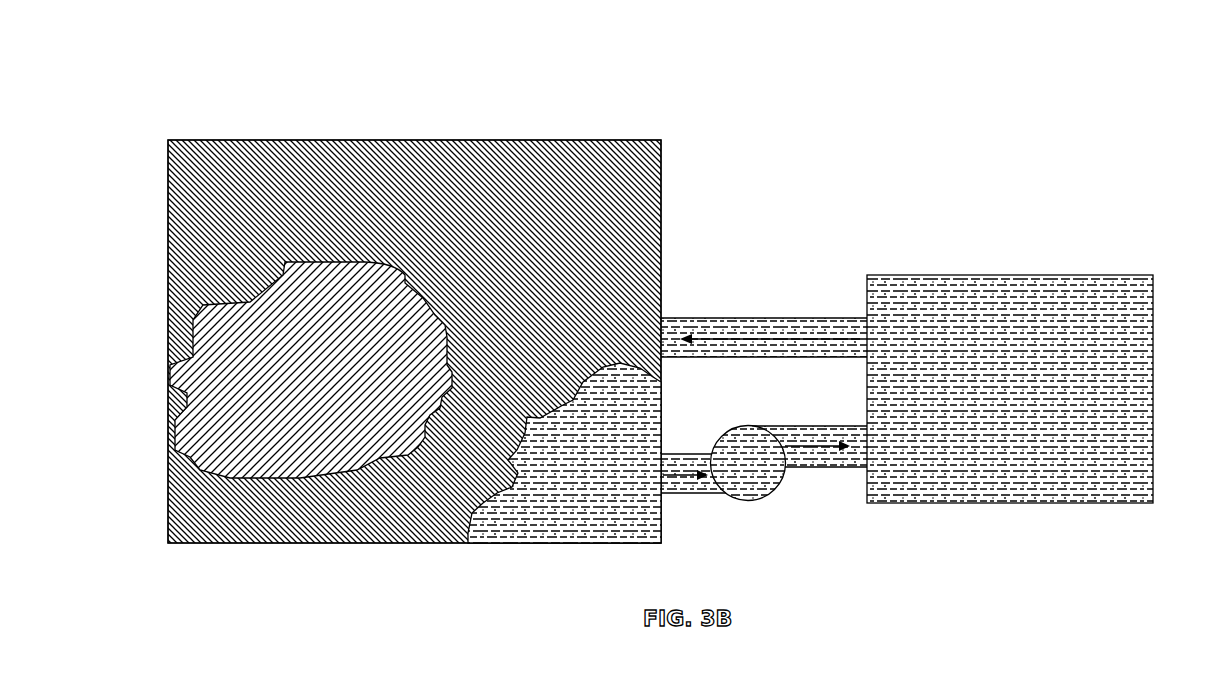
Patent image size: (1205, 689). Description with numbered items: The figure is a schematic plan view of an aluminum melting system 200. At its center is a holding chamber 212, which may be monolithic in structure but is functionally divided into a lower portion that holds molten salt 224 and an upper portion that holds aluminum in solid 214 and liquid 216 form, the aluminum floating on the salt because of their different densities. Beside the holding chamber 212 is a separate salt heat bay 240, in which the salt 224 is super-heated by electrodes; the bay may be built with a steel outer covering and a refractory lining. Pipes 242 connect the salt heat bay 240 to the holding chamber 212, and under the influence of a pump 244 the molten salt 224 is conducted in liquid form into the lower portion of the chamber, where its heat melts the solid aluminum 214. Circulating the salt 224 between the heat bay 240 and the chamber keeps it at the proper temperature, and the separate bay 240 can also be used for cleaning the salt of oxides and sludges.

The aluminum melting system 200 is at (227, 51).
The holding chamber 212 is at (414, 313).
The solid aluminum 214 is at (337, 381).
The liquid aluminum 216 is at (541, 223).
The molten salt 224 is at (618, 475).
The salt heat bay 240 is at (928, 275).
The pipes 242 is at (765, 318).
The pump 244 is at (738, 427).